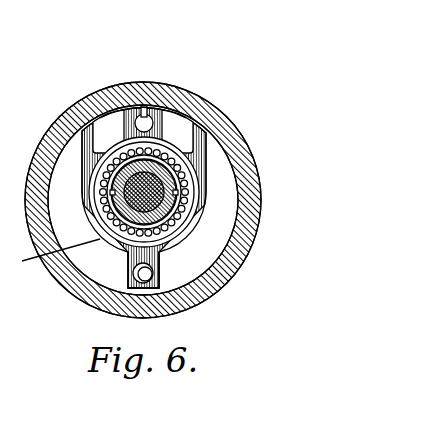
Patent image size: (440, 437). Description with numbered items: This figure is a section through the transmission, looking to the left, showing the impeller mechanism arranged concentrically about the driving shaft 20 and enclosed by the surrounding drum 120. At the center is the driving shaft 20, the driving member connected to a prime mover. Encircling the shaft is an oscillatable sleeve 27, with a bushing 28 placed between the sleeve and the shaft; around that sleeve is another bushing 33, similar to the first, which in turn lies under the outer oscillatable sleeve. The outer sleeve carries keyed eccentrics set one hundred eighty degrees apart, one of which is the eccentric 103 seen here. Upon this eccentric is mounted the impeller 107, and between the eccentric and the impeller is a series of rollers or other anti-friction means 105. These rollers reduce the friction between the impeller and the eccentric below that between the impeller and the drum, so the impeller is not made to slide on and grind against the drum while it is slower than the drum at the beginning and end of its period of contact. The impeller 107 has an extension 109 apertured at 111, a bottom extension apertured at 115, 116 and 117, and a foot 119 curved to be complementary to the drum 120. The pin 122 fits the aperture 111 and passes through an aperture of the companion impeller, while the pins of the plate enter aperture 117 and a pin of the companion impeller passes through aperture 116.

The driving shaft 20 is at (150, 194).
The oscillatable sleeve 27 is at (98, 238).
The bushing 28 is at (112, 193).
The bushing 33 is at (165, 235).
The eccentric 103 is at (118, 173).
The rollers or anti-friction means 105 is at (190, 205).
The impeller 107 is at (197, 163).
The extension 109 is at (207, 303).
The aperture 111 is at (159, 270).
The aperture 115 is at (181, 122).
The aperture 116 is at (146, 118).
The aperture 117 is at (110, 125).
The foot 119 is at (118, 104).
The drum 120 is at (261, 191).
The pin 122 is at (128, 270).